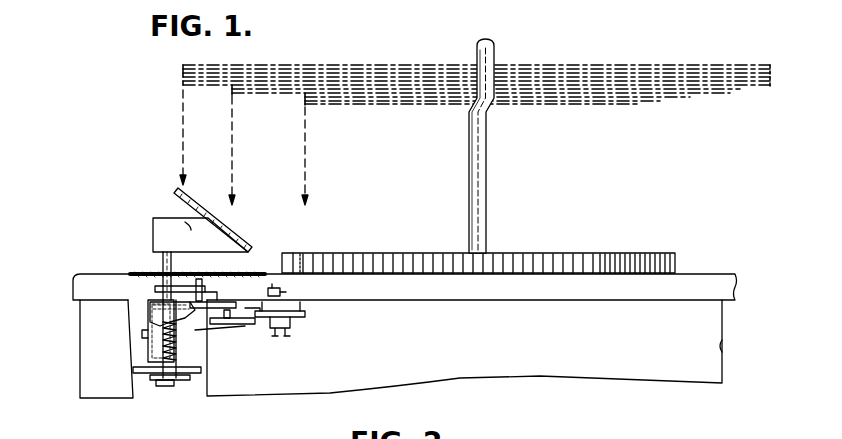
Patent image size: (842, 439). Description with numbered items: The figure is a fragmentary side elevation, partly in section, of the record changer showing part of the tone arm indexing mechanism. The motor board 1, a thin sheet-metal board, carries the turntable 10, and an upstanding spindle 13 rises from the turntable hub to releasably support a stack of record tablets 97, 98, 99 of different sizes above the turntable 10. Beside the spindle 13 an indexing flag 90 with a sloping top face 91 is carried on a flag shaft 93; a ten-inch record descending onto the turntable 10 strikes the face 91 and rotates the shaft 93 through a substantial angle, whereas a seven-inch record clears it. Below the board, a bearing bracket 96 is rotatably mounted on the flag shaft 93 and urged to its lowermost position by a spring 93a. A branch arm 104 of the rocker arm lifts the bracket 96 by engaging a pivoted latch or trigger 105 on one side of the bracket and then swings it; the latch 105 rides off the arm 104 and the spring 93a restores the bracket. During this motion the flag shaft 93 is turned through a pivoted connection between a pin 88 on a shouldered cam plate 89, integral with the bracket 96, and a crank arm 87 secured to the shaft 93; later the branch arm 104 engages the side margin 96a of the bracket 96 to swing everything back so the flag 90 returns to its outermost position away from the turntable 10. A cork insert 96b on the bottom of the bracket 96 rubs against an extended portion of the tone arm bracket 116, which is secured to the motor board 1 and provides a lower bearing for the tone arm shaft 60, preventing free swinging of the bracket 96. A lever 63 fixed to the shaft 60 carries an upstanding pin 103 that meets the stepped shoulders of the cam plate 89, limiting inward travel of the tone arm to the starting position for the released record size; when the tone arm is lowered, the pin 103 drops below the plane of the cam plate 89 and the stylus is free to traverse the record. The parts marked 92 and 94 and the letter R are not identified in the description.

The motor board 1 is at (76, 272).
The turntable 10 is at (590, 253).
The spindle 13 is at (488, 150).
The tone arm shaft 60 is at (288, 297).
The lever 63 is at (298, 328).
The crank arm 87 is at (161, 297).
The pin 88 is at (205, 292).
The shouldered cam plate 89 is at (230, 310).
The indexing flag 90 is at (188, 228).
The sloping face 91 is at (241, 230).
The block 92 is at (153, 227).
The flag shaft 93 is at (162, 260).
The spring 93a is at (192, 338).
The post 94 is at (178, 286).
The bearing bracket 96 is at (148, 348).
The side margin 96a is at (150, 335).
The cork insert 96b is at (155, 378).
The record tablet 97 is at (340, 106).
The record tablet 98 is at (262, 94).
The record tablet 99 is at (186, 90).
The pin 103 is at (295, 311).
The branch arm 104 is at (228, 338).
The latch or trigger 105 is at (155, 313).
The tone arm bracket 116 is at (148, 374).
The web roll direction R is at (645, 100).